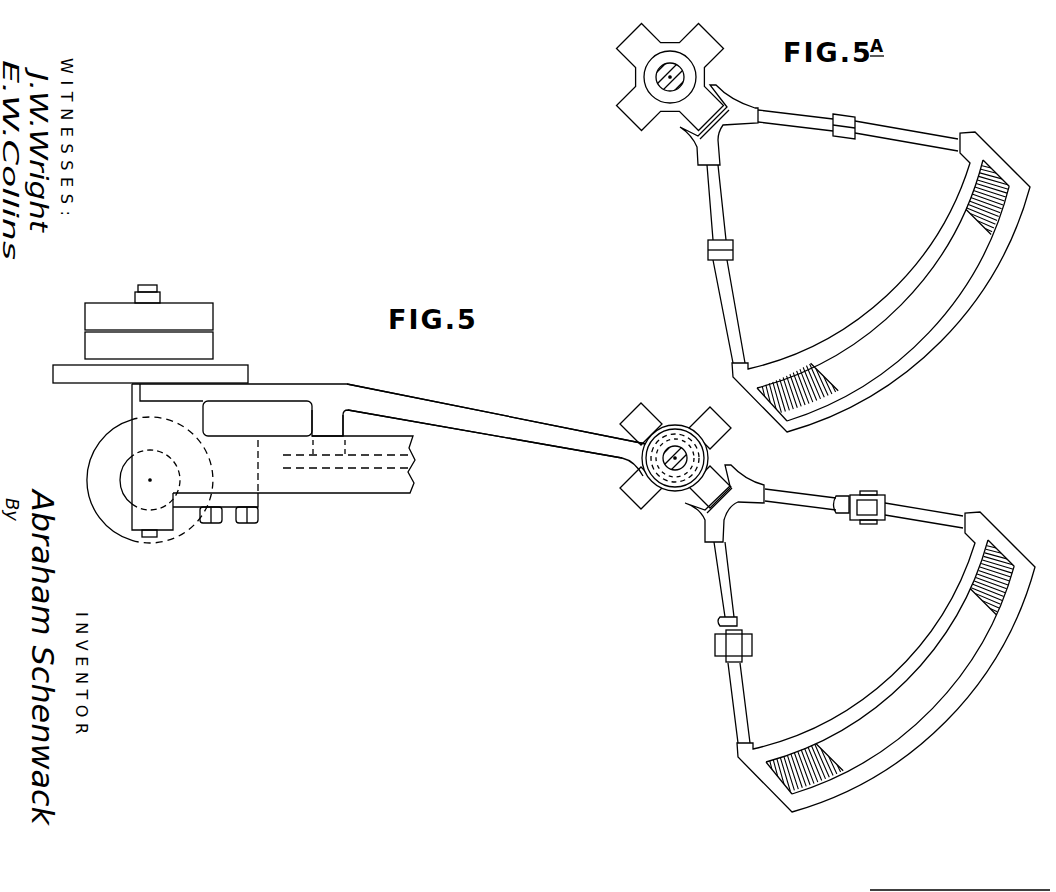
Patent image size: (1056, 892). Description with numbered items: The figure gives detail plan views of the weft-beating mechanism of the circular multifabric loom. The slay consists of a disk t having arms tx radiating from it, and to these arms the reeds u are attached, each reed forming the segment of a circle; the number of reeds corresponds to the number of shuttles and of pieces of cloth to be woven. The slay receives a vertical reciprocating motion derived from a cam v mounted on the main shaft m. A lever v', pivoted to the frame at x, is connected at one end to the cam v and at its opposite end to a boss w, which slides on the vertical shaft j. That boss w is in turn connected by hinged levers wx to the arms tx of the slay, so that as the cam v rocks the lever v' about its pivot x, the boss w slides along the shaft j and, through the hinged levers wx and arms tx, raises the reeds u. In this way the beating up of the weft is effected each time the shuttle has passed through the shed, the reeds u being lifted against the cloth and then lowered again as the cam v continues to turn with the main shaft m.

In FIG. 5, the main shaft m is at (143, 284).
In FIG. 5, the cam v is at (166, 365).
In FIG. 5, the lever v' is at (496, 421).
In FIG. 5, the pivot x is at (325, 425).
In FIG. 5, the shaft j is at (672, 459).
In FIG. 5A, the shaft j is at (671, 88).
In FIG. 5, the boss w is at (710, 433).
In FIG. 5, the hinged levers wx is at (805, 500).
In FIG. 5, the arms tx is at (937, 500).
In FIG. 5A, the arms tx is at (917, 138).
In FIG. 5A, the disk t is at (627, 65).
In FIG. 5, the reeds u is at (960, 608).
In FIG. 5A, the reeds u is at (982, 255).